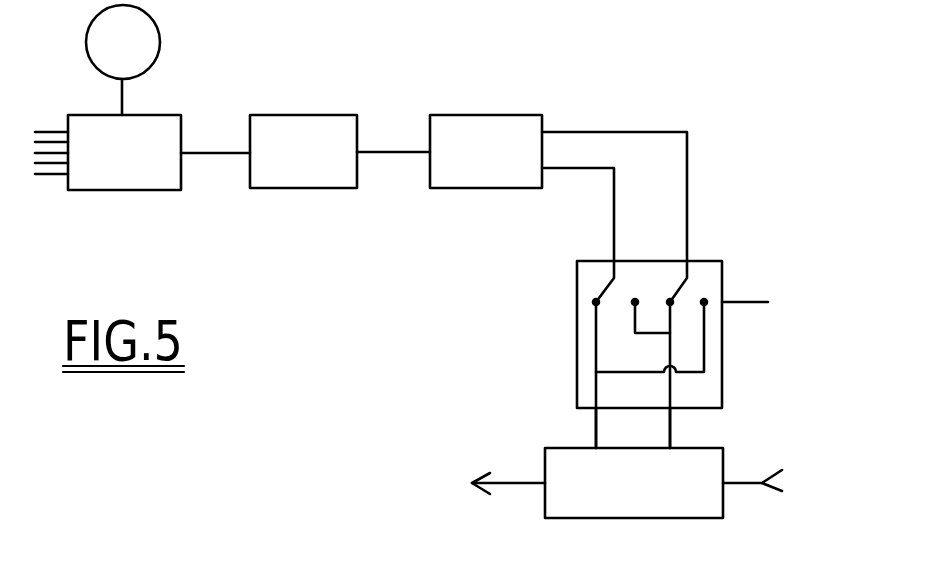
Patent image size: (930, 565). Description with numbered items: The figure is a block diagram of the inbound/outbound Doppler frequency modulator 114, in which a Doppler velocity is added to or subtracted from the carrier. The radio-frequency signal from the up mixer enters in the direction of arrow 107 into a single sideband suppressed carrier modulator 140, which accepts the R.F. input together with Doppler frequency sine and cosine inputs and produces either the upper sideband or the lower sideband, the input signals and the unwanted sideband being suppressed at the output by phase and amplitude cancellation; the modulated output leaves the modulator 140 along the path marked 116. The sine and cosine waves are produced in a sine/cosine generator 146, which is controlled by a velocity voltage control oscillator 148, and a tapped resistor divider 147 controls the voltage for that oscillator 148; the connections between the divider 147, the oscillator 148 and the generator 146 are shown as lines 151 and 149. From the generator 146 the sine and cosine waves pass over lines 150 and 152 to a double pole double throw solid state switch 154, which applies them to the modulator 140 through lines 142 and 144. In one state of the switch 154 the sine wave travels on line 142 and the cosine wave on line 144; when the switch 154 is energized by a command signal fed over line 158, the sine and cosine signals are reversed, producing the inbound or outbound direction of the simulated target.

The modulator 114 is at (379, 281).
The tapped resistor divider 147 is at (141, 171).
The velocity voltage control oscillator 148 is at (326, 171).
The sine/cosine generator 146 is at (508, 171).
The connection line 151 is at (213, 151).
The connection line 149 is at (393, 150).
The line 152 is at (665, 130).
The line 150 is at (565, 168).
The double pole double throw solid state switch 154 is at (577, 312).
The line 158 is at (757, 304).
The line 142 is at (596, 430).
The line 144 is at (671, 430).
The single sideband suppressed carrier modulator 140 is at (650, 500).
The output signal 116 is at (505, 484).
The arrow 107 is at (750, 485).